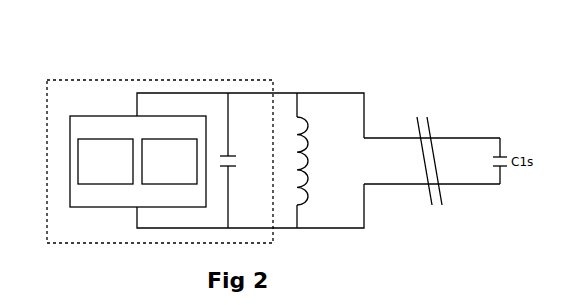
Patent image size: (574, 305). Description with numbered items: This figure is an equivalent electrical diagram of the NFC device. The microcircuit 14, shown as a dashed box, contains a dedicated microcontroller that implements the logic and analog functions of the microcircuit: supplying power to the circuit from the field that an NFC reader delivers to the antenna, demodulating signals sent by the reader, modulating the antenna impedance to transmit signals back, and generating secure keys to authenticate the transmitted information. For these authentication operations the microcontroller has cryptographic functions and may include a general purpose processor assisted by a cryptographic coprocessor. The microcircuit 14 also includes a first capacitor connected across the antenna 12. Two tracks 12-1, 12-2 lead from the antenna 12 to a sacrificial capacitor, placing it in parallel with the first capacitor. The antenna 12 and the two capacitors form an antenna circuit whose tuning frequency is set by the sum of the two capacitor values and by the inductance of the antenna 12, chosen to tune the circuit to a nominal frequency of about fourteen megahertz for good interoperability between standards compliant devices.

The microcircuit 14 is at (67, 102).
The antenna 12 is at (296, 160).
The track 12-1 is at (432, 192).
The track 12-2 is at (432, 130).